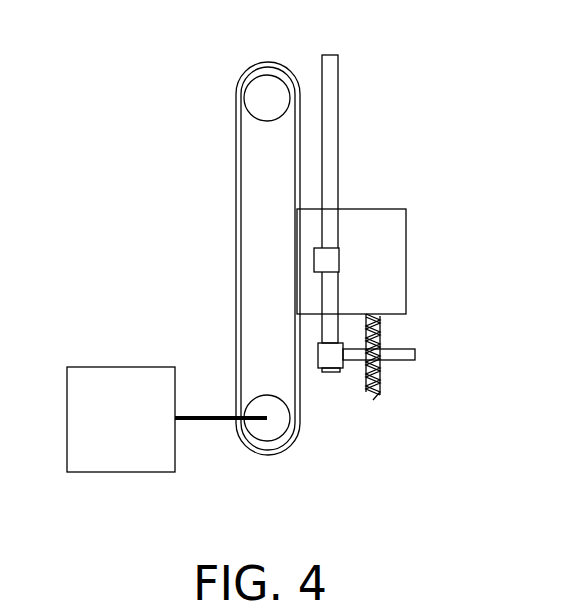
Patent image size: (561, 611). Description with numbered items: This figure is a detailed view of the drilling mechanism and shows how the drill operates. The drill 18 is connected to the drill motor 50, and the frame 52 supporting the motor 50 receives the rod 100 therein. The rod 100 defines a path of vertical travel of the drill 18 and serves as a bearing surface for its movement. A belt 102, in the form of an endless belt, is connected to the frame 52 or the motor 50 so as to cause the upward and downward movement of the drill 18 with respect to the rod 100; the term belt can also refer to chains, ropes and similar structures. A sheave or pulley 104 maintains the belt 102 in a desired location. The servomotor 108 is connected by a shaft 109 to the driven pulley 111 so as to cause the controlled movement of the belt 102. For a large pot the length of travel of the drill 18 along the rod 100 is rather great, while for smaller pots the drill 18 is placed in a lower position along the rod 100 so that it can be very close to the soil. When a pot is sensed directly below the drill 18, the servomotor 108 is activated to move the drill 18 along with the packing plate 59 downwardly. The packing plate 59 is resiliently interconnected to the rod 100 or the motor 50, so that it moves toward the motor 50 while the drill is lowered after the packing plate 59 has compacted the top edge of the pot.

The drill 18 is at (382, 382).
The drill motor 50 is at (395, 255).
The frame 52 is at (340, 258).
The packing plate 59 is at (415, 352).
The rod 100 is at (333, 105).
The belt 102 is at (240, 247).
The pulley 104 is at (267, 88).
The servomotor 108 is at (123, 367).
The shaft 109 is at (213, 423).
The driven pulley 111 is at (278, 430).